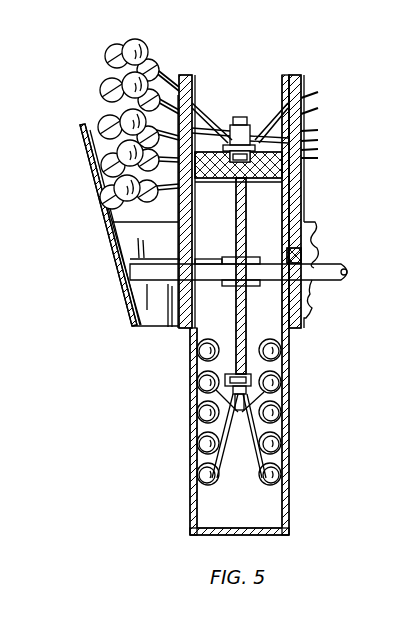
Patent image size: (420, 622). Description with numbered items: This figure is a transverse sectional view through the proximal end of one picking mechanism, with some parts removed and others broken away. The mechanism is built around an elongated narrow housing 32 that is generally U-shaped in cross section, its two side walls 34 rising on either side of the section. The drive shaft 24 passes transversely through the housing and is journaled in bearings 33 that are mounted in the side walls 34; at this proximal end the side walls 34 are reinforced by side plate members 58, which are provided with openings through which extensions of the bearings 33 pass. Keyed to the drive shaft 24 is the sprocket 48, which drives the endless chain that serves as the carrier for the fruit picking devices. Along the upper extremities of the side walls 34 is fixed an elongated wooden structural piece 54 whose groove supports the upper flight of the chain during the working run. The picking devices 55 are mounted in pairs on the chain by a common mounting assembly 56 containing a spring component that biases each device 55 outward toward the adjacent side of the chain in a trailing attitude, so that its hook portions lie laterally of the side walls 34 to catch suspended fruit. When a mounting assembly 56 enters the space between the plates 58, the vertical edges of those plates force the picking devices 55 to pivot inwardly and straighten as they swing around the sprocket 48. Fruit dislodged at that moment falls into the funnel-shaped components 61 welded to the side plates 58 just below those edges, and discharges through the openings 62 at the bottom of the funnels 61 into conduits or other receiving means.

The drive shaft 24 is at (317, 286).
The housing 32 is at (292, 522).
The bearings 33 is at (202, 239).
The side walls 34 is at (202, 452).
The sprocket 48 is at (268, 222).
The elongated wooden structural piece 54 is at (267, 181).
The picking devices 55 is at (104, 83).
The mounting assembly 56 is at (255, 126).
The side plate members 58 is at (283, 75).
The funnel-shaped components 61 is at (114, 251).
The openings 62 is at (154, 331).